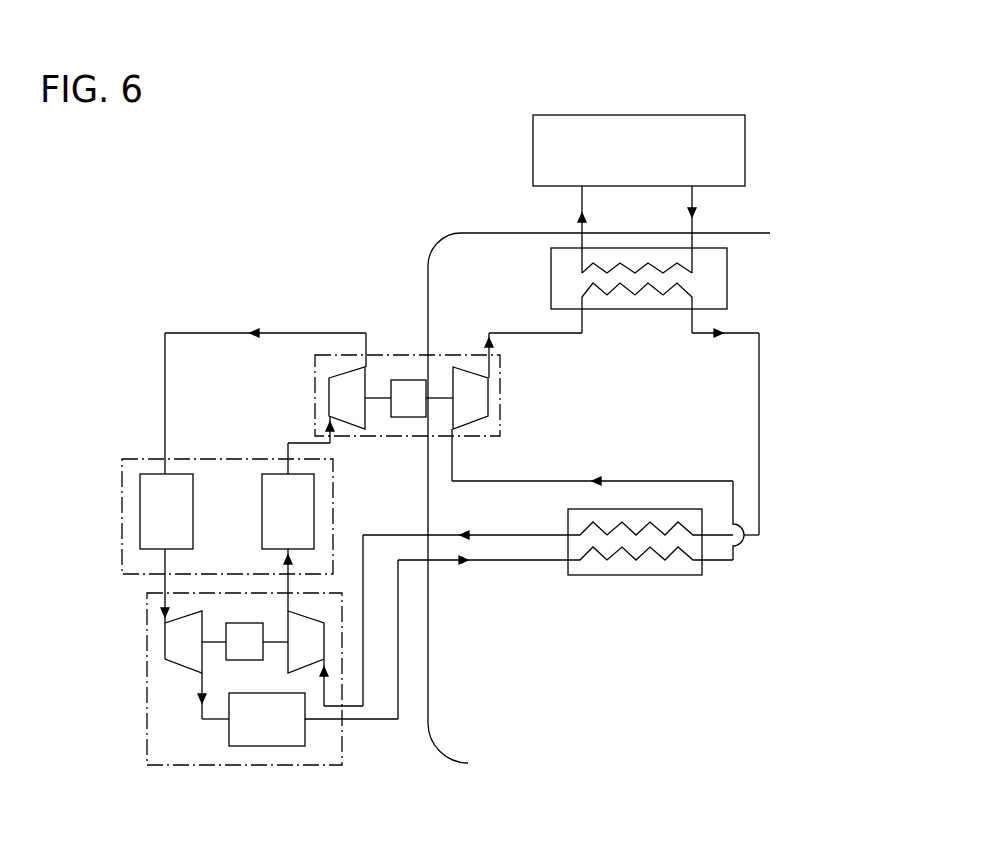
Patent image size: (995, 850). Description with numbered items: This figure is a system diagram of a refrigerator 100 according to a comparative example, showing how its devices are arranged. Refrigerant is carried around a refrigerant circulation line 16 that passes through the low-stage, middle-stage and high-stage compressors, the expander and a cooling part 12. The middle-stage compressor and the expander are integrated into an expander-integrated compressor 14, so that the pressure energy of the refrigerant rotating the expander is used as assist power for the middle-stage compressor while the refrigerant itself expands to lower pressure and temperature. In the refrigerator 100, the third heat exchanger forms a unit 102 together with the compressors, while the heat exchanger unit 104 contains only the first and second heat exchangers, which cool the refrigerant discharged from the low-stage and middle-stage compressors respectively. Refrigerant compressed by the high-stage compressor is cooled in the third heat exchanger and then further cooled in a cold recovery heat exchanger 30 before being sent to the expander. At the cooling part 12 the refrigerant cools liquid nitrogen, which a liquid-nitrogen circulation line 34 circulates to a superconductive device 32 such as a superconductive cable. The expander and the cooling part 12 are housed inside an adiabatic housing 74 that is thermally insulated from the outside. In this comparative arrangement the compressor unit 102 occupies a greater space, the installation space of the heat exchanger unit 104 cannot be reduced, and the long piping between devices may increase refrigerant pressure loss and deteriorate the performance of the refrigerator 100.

The refrigerator 100 is at (713, 68).
The superconductive device 32 is at (652, 168).
The liquid-nitrogen circulation line 34 is at (694, 200).
The adiabatic housing 74 is at (448, 234).
The cooling part 12 is at (728, 275).
The refrigerant circulation line 16 is at (306, 333).
The expander-integrated compressor 14 is at (384, 355).
The heat exchanger unit 104 is at (122, 518).
The compressor unit 102 is at (147, 690).
The cold recovery heat exchanger 30 is at (605, 577).